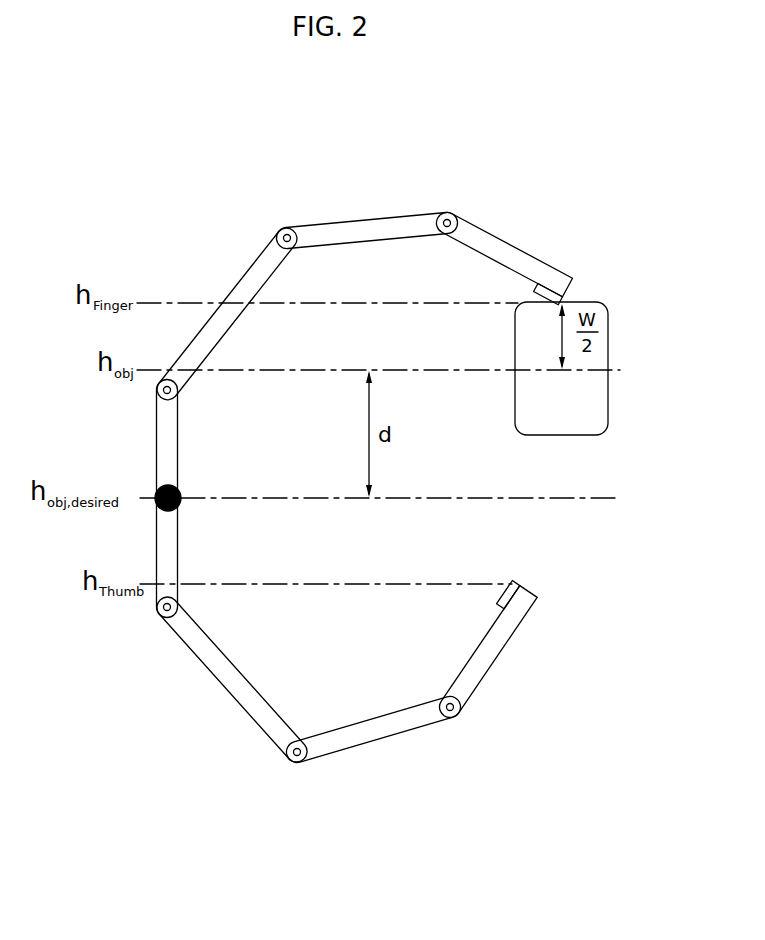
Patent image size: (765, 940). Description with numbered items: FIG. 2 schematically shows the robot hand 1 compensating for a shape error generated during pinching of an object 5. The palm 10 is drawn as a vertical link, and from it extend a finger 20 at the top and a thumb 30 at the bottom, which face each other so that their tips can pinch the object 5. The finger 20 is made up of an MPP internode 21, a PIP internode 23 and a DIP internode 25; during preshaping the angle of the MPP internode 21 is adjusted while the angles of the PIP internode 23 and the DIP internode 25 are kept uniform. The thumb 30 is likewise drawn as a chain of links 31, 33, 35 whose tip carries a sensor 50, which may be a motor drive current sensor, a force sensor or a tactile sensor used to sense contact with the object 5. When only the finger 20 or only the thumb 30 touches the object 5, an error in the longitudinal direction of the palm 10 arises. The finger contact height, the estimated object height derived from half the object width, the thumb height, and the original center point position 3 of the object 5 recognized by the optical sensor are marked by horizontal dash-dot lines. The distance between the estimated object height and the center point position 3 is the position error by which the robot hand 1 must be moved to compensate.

The robot hand 1 is at (85, 722).
The original center point position 3 is at (181, 487).
The object 5 is at (613, 407).
The palm 10 is at (163, 430).
The finger 20 is at (230, 143).
The MPP internode 21 is at (258, 265).
The PIP internode 23 is at (361, 226).
The DIP internode 25 is at (512, 250).
The thumb 30 is at (535, 852).
The first thumb link 31 is at (267, 723).
The second thumb link 33 is at (365, 735).
The third thumb link 35 is at (490, 673).
The sensor 50 is at (510, 582).